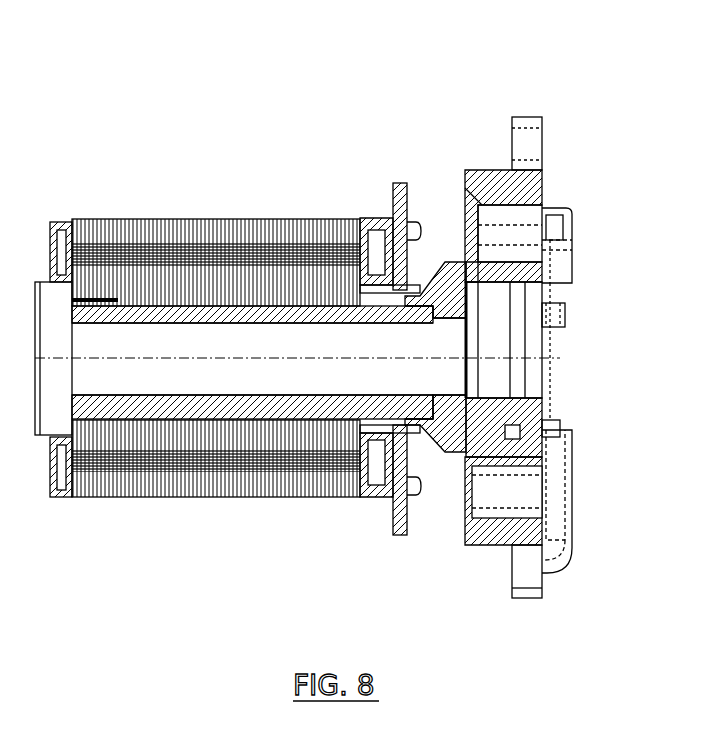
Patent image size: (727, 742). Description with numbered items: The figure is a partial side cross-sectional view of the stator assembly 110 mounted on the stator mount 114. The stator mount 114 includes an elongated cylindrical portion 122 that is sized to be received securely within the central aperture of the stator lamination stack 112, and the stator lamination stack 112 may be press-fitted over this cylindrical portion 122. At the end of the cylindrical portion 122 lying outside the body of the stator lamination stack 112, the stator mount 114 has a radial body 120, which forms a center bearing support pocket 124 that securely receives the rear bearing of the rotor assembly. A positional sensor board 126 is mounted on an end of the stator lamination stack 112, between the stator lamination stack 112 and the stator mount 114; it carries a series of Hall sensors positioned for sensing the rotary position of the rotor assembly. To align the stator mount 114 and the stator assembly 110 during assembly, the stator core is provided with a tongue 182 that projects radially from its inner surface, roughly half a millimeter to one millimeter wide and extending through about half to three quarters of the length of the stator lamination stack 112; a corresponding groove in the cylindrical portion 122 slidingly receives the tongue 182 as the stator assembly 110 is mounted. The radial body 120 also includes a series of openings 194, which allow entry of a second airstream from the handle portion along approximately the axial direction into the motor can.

The stator assembly 110 is at (170, 192).
The stator lamination stack 112 is at (250, 219).
The stator mount 114 is at (473, 118).
The radial body 120 is at (530, 190).
The elongated cylindrical portion 122 is at (272, 405).
The center bearing support pocket 124 is at (527, 447).
The positional sensor board 126 is at (398, 183).
The tongue 182 is at (186, 306).
The openings 194 is at (522, 232).